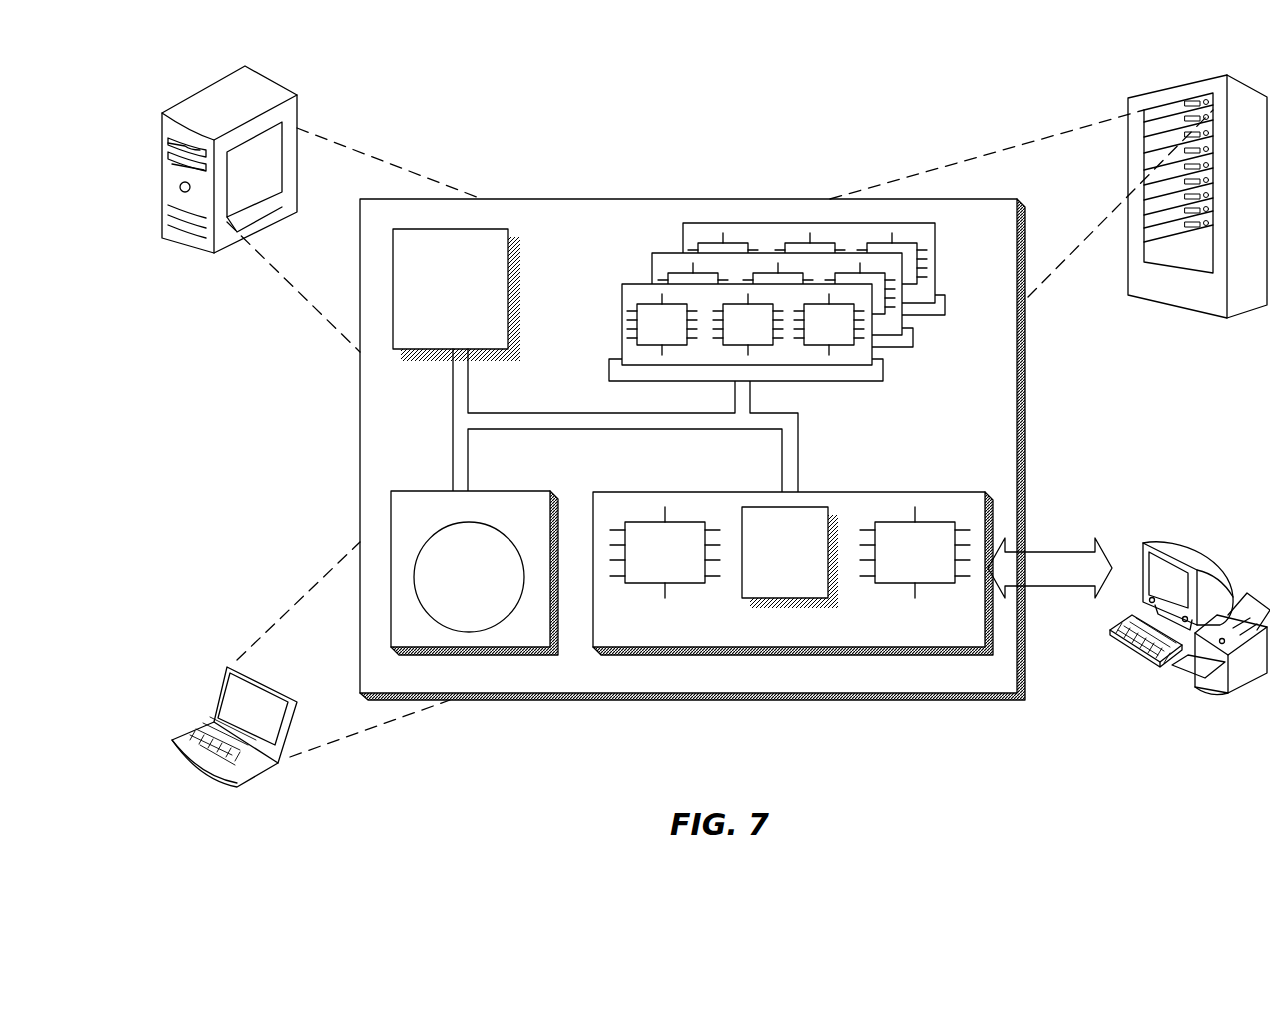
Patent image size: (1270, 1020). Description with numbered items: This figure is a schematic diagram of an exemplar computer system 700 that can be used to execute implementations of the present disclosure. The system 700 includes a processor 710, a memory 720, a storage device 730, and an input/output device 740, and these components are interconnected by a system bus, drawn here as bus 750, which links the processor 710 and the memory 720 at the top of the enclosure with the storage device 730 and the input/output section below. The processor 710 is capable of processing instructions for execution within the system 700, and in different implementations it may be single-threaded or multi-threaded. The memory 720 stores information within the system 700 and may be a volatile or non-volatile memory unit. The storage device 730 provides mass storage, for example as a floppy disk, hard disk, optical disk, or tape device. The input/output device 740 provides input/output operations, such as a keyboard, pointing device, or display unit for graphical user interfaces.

The computer system 700 is at (528, 88).
The processor 710 is at (456, 295).
The memory 720 is at (945, 347).
The storage device 730 is at (474, 573).
The input/output device 740 is at (1143, 547).
The bus 750 is at (622, 429).